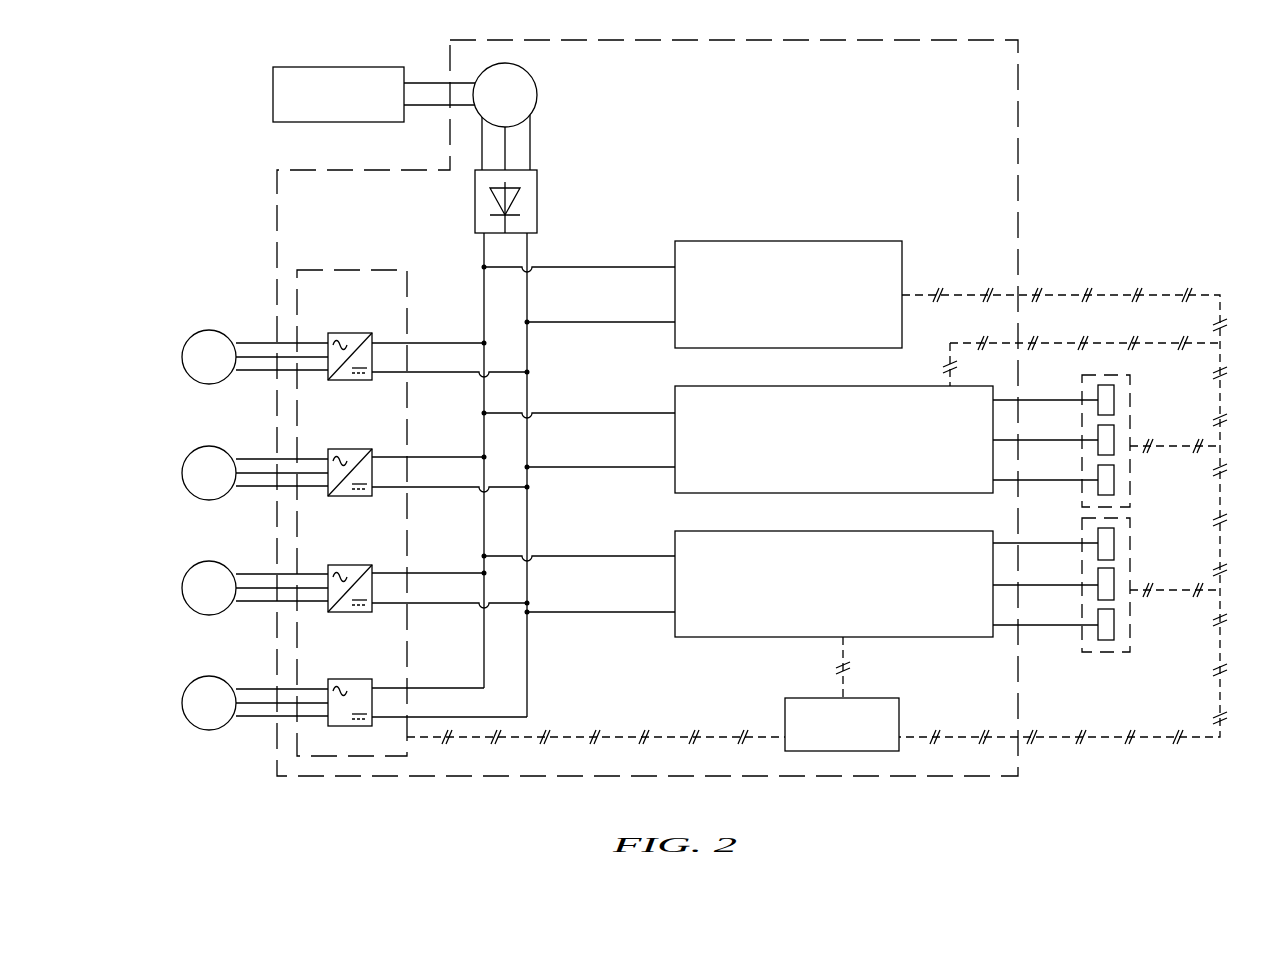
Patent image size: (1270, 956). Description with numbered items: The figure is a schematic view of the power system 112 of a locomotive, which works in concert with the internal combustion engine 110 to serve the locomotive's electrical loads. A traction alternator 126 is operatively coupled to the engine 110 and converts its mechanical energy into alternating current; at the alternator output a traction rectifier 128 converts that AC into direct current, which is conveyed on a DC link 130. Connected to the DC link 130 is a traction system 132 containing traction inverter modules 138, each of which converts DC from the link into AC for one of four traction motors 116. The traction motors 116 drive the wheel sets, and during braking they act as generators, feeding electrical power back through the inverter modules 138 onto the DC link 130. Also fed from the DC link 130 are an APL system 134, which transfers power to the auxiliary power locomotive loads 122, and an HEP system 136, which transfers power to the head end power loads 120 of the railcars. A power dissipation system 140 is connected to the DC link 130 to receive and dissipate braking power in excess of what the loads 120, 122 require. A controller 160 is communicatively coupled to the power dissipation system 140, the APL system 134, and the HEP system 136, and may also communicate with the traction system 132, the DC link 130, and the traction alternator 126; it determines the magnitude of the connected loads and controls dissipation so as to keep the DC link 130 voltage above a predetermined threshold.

The internal combustion engine 110 is at (273, 96).
The power system 112 is at (1034, 117).
The traction motor 116 is at (182, 357).
The head end power (HEP) loads 120 is at (1130, 635).
The auxiliary power locomotive (APL) loads 122 is at (1130, 487).
The traction alternator 126 is at (537, 93).
The traction rectifier 128 is at (537, 196).
The DC link 130 is at (484, 243).
The traction system 132 is at (318, 270).
The APL system 134 is at (675, 480).
The HEP system 136 is at (675, 627).
The traction inverter module 138 is at (345, 333).
The power dissipation system 140 is at (828, 241).
The controller 160 is at (808, 698).